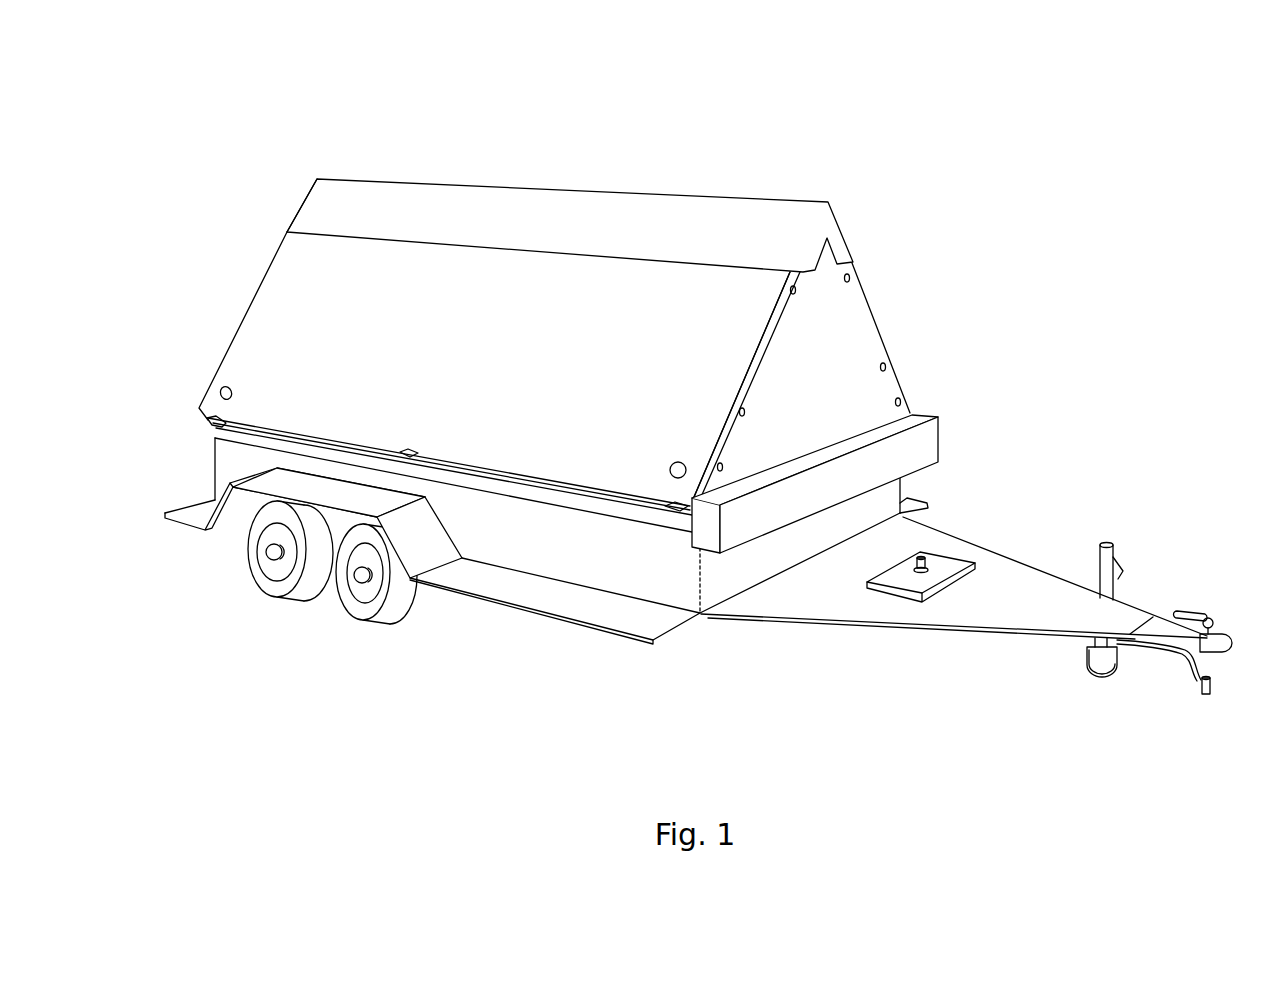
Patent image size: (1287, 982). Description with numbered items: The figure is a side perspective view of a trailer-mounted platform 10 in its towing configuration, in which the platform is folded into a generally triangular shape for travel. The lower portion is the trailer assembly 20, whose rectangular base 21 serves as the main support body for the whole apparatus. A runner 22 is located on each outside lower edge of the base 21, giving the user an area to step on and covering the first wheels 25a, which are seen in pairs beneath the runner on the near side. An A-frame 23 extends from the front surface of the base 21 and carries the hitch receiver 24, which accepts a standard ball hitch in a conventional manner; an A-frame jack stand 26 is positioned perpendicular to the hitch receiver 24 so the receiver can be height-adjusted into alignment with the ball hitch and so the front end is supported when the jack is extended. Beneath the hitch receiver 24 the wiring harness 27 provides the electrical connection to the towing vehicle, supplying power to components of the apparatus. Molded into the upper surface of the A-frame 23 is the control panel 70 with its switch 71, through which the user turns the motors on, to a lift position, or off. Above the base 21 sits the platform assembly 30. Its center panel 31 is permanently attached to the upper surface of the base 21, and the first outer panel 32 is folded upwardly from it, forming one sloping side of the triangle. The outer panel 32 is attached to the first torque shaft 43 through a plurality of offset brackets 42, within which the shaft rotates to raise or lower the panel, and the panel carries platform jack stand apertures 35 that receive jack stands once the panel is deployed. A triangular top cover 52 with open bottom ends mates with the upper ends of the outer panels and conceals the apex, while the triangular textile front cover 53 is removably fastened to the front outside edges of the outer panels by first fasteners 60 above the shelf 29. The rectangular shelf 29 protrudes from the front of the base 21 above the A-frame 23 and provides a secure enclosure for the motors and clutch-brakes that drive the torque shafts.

The trailer-mounted platform 10 is at (1122, 152).
The platform assembly 30 is at (272, 151).
The top cover 52 is at (645, 205).
The first outer panel 32 is at (303, 277).
The front cover 53 is at (845, 302).
The first fasteners 60 is at (723, 465).
The platform jack stand aperture 35 is at (226, 385).
The offset brackets 42 is at (208, 418).
The first torque shaft 43 is at (318, 437).
The trailer assembly 20 is at (200, 582).
The center panel 31 is at (230, 436).
The base 21 is at (643, 565).
The first wheels 25a is at (377, 608).
The runners 22 is at (193, 513).
The A-frame 23 is at (800, 585).
The shelf 29 is at (925, 440).
The control panel 70 is at (897, 593).
The switch 71 is at (925, 572).
The A-frame jack stand 26 is at (1107, 543).
The hitch receiver 24 is at (1210, 615).
The wiring harness 27 is at (1208, 697).